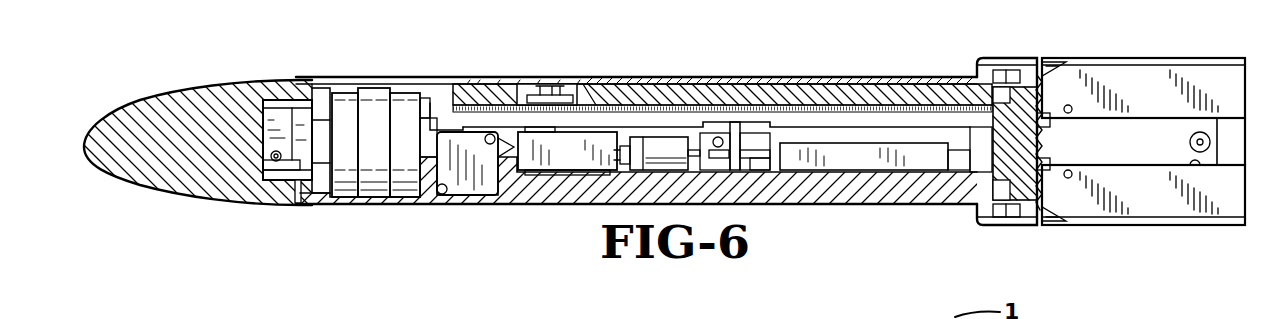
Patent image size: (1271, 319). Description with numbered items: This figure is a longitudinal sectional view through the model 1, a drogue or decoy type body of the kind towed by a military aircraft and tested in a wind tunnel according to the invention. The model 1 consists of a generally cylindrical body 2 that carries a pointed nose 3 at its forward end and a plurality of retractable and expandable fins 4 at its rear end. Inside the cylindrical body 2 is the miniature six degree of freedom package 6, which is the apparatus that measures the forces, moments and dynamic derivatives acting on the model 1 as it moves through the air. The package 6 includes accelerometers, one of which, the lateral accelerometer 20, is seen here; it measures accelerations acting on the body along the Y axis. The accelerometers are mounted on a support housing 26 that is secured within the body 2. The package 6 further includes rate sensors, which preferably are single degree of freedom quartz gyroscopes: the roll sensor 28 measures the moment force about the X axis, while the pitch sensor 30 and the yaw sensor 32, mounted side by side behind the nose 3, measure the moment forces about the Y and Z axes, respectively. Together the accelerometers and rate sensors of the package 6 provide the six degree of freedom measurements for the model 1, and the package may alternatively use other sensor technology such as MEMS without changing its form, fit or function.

The model 1 is at (893, 60).
The cylindrical body 2 is at (778, 77).
The pointed nose 3 is at (108, 118).
The fins 4 is at (1140, 75).
The six degree of freedom package 6 is at (637, 120).
The lateral accelerometer 20 is at (475, 142).
The support housing 26 is at (545, 193).
The roll sensor 28 is at (597, 140).
The pitch sensor 30 is at (408, 185).
The yaw sensor 32 is at (338, 185).